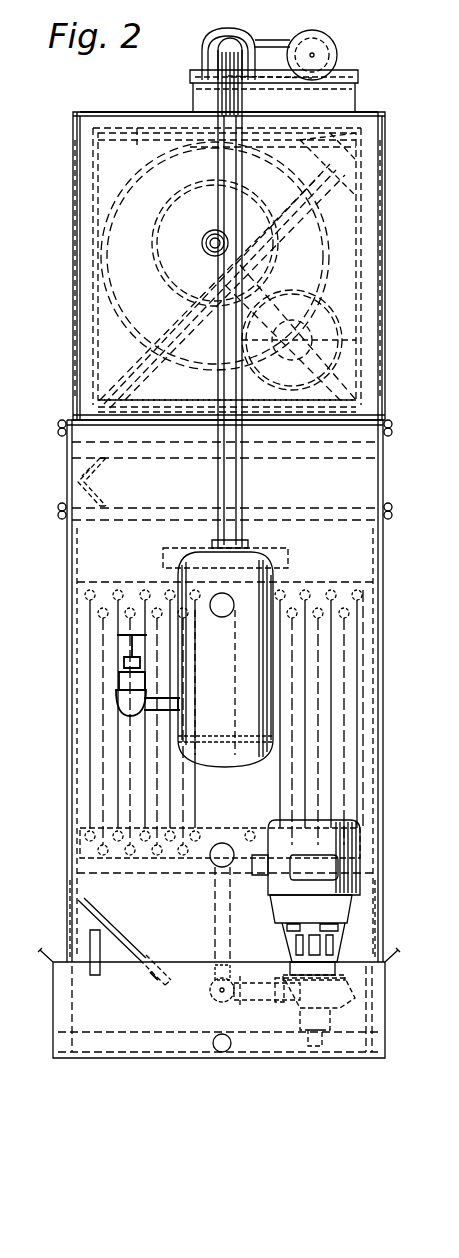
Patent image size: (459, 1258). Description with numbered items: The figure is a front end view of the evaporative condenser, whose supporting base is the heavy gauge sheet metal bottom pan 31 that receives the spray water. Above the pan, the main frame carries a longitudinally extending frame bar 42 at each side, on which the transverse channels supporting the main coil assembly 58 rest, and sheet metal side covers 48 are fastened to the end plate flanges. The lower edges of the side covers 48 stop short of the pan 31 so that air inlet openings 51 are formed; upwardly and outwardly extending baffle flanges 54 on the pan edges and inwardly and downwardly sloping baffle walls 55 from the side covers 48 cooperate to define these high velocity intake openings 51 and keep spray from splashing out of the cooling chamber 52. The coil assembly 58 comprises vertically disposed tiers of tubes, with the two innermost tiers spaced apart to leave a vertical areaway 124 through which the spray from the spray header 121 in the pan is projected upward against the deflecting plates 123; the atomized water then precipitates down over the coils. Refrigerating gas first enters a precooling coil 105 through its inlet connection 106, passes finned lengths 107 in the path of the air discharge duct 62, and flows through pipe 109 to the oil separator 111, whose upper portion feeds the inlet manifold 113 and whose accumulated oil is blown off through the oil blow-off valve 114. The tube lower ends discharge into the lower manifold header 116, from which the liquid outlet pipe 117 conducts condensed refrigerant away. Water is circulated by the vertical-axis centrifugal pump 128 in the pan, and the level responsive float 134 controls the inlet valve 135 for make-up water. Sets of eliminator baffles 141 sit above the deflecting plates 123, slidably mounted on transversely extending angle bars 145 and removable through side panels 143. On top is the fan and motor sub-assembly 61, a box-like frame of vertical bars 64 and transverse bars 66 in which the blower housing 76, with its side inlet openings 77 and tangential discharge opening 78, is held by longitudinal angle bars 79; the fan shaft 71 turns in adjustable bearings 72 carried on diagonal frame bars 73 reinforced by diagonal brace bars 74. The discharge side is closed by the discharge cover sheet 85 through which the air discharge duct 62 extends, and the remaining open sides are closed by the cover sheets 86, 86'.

The bottom pan 31 is at (147, 1059).
The longitudinally extending frame bar 42 is at (86, 878).
The side cover 48 is at (67, 750).
The air inlet opening 51 is at (66, 932).
The cooling chamber 52 is at (363, 687).
The baffle flange 54 is at (48, 963).
The baffle wall 55 is at (102, 918).
The main coil assembly 58 is at (320, 600).
The fan and motor sub-assembly 61 is at (389, 272).
The air discharge duct 62 is at (358, 66).
The vertical bar 64 is at (98, 302).
The transverse bar 66 is at (227, 259).
The fan shaft 71 is at (212, 222).
The adjustable bearing 72 is at (204, 238).
The diagonal frame bar 73 is at (162, 308).
The diagonal brace bar 74 is at (299, 323).
The blower housing 76 is at (227, 395).
The side inlet opening 77 is at (160, 250).
The tangential discharge opening 78 is at (362, 147).
The longitudinal angle bar 79 is at (130, 347).
The discharge cover sheet 85 is at (163, 112).
The cover sheet 86 is at (54, 270).
The cover sheet 86' is at (401, 270).
The precooling coil 105 is at (270, 40).
The inlet connection 106 is at (331, 39).
The heat radiating fin 107 is at (226, 34).
The pipe 109 is at (217, 482).
The oil separator 111 is at (262, 553).
The inlet manifold 113 is at (350, 583).
The oil blow-off valve 114 is at (116, 706).
The lower manifold header 116 is at (95, 823).
The liquid outlet pipe 117 is at (213, 866).
The spray header 121 is at (210, 996).
The deflecting plate 123 is at (163, 558).
The vertical areaway 124 is at (219, 682).
The centrifugal pump 128 is at (384, 1010).
The level responsive float 134 is at (152, 962).
The inlet valve 135 is at (148, 975).
The eliminator baffle 141 is at (76, 488).
The removable side panel 143 is at (66, 494).
The transversely extending angle bar 145 is at (390, 501).